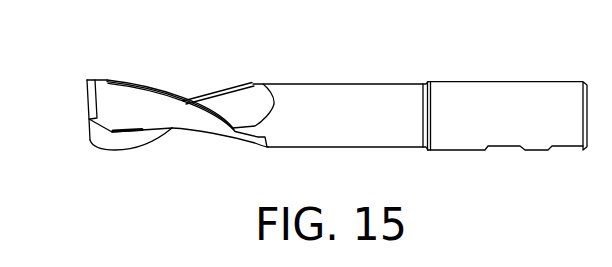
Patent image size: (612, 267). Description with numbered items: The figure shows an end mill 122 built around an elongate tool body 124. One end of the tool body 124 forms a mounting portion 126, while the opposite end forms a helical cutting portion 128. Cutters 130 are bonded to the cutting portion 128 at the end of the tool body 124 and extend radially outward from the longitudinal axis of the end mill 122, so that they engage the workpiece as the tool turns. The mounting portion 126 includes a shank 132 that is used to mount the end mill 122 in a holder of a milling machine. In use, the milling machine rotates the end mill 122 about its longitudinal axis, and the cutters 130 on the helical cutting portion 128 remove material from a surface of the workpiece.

The end mill 122 is at (400, 82).
The elongate tool body 124 is at (274, 84).
The mounting portion 126 is at (413, 148).
The helical cutting portion 128 is at (204, 87).
The cutters 130 is at (87, 91).
The shank 132 is at (485, 82).